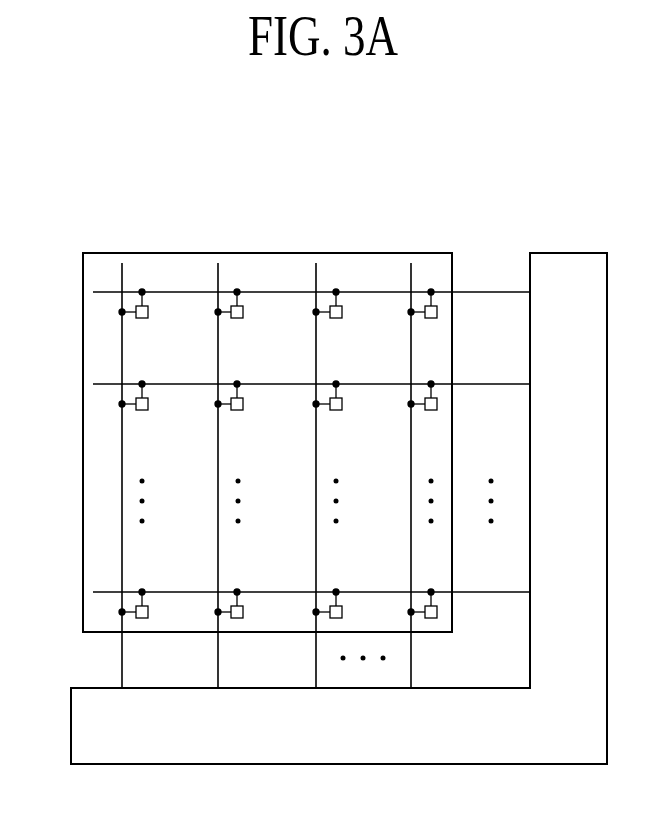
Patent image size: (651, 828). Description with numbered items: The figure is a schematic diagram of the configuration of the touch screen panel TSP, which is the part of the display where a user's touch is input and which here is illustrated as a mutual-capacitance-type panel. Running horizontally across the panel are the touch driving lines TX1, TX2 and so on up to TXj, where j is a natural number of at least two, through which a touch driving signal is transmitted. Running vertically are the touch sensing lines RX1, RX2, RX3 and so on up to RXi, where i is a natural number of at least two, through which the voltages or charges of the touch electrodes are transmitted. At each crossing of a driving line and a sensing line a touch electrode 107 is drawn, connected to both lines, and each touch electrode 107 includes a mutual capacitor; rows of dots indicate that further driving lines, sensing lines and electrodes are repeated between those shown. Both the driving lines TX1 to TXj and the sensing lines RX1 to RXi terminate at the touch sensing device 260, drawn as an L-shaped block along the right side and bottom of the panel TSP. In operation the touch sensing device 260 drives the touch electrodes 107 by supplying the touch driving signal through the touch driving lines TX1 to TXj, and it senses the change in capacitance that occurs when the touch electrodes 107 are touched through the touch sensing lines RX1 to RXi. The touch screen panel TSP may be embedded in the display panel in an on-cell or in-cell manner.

The touch electrode 107 is at (141, 319).
The touch sensing device 260 is at (311, 740).
The touch screen panel TSP is at (302, 488).
The touch driving line TX1 is at (497, 292).
The touch driving line TX2 is at (497, 384).
The touch driving line TXj is at (497, 592).
The touch sensing line RX1 is at (122, 657).
The touch sensing line RX2 is at (218, 657).
The touch sensing line RX3 is at (316, 657).
The touch sensing line RXi is at (411, 657).